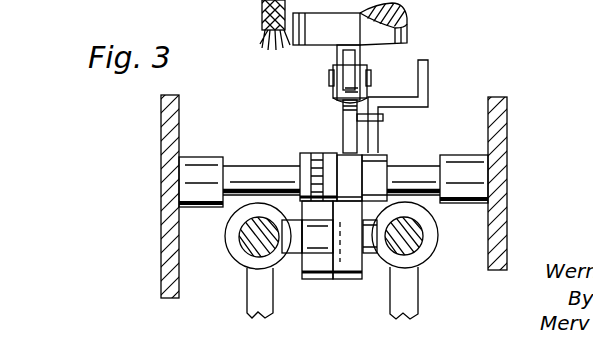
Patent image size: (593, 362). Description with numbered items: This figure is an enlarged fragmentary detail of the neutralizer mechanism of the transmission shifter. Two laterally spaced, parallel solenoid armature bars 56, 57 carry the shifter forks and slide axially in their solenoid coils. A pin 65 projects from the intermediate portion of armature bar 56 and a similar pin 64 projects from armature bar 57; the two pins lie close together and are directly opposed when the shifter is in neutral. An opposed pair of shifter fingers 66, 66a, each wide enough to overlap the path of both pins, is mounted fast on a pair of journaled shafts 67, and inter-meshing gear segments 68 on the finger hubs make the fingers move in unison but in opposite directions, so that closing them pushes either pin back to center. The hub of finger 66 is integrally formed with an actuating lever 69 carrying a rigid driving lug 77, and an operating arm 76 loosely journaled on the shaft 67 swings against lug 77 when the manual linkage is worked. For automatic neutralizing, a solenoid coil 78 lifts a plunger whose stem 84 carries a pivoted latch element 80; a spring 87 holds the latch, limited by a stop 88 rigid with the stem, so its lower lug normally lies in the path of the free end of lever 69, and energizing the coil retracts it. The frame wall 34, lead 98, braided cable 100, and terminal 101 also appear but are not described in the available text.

The frame wall 34 is at (159, 126).
The solenoid armature bar 56 is at (250, 243).
The solenoid armature bar 57 is at (412, 239).
The pin 64 is at (368, 258).
The pin 65 is at (309, 258).
The shifter finger 66 is at (356, 276).
The shifter finger 66a is at (321, 276).
The journaled shaft 67 is at (244, 167).
The gear segment 68 is at (300, 162).
The actuating lever 69 is at (343, 133).
The operating arm 76 is at (428, 77).
The driving pin or lug 77 is at (384, 117).
The solenoid coil 78 is at (313, 42).
The latch element 80 is at (345, 72).
The stem 84 is at (361, 53).
The spring 87 is at (337, 96).
The stop 88 is at (360, 89).
The lead 98 is at (463, 8).
The braided cable 100 is at (262, 5).
The terminal 101 is at (513, 5).